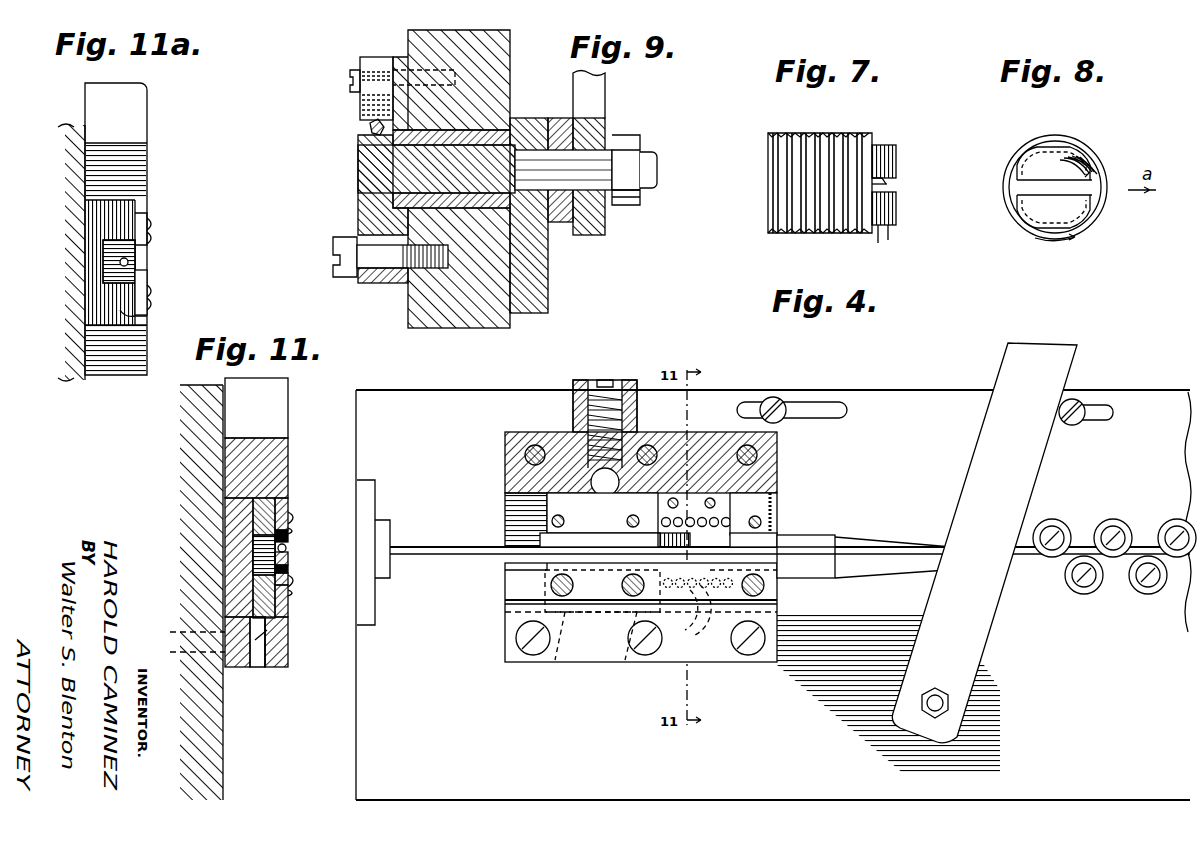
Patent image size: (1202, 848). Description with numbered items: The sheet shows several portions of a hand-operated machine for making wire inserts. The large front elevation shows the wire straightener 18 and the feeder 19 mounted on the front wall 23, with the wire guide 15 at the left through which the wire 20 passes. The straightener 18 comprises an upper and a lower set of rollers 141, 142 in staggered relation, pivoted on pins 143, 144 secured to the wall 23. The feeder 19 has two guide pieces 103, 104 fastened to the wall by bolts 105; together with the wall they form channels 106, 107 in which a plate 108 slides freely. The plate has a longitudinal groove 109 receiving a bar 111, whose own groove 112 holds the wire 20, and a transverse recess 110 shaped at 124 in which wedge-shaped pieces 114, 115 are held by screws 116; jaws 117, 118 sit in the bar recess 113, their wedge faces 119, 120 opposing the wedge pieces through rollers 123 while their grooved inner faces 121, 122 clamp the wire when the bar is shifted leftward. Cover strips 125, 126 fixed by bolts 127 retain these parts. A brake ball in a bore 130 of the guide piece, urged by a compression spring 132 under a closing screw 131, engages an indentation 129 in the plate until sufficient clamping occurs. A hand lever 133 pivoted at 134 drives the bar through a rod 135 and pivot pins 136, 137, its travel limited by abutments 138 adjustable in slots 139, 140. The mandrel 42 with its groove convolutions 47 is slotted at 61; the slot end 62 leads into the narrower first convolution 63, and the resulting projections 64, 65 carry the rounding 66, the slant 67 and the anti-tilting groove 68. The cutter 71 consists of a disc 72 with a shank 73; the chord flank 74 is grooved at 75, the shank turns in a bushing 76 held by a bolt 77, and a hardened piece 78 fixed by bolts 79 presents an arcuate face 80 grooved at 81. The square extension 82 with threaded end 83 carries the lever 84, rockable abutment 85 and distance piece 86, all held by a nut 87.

In FIG. 4, the wire guide 15 is at (381, 501).
In FIG. 4, the wire straightener 18 is at (1131, 505).
In FIG. 11A, the feeder 19 is at (151, 181).
In FIG. 4, the feeder 19 is at (487, 616).
In FIG. 11A, the wire 20 is at (140, 258).
In FIG. 11, the wire 20 is at (286, 545).
In FIG. 4, the wire 20 is at (433, 551).
In FIG. 11A, the front wall 23 is at (70, 333).
In FIG. 9, the front wall 23 is at (420, 303).
In FIG. 11, the front wall 23 is at (176, 415).
In FIG. 4, the front wall 23 is at (888, 693).
In FIG. 7, the mandrel 42 is at (779, 123).
In FIG. 7, the groove convolutions 47 is at (820, 238).
In FIG. 7, the slot 61 is at (895, 178).
In FIG. 8, the slot 61 is at (1030, 178).
In FIG. 8, the end of slot 62 is at (1098, 208).
In FIG. 7, the first convolution 63 is at (891, 240).
In FIG. 8, the first convolution 63 is at (1087, 230).
In FIG. 7, the projection 64 is at (897, 210).
In FIG. 8, the projection 64 is at (1045, 207).
In FIG. 7, the projection 65 is at (880, 162).
In FIG. 8, the projection 65 is at (1075, 158).
In FIG. 8, the rounding 66 is at (1092, 222).
In FIG. 8, the slanted portion 67 is at (1087, 172).
In FIG. 7, the groove 68 is at (888, 178).
In FIG. 8, the groove 68 is at (1030, 158).
In FIG. 9, the cutter 71 is at (346, 183).
In FIG. 9, the disc 72 is at (360, 211).
In FIG. 9, the shank 73 is at (468, 135).
In FIG. 9, the flank 74 is at (375, 140).
In FIG. 9, the groove 75 is at (380, 135).
In FIG. 9, the bushing 76 is at (380, 284).
In FIG. 9, the bolt 77 is at (340, 278).
In FIG. 9, the hardened piece 78 is at (371, 67).
In FIG. 9, the bolts 79 is at (336, 69).
In FIG. 9, the arcuate face 80 is at (360, 111).
In FIG. 9, the groove 81 is at (368, 126).
In FIG. 9, the square extension 82 is at (560, 192).
In FIG. 9, the threaded end 83 is at (657, 168).
In FIG. 9, the lever 84 is at (538, 274).
In FIG. 9, the rockable abutment 85 is at (605, 92).
In FIG. 9, the distance piece 86 is at (560, 118).
In FIG. 9, the nut 87 is at (632, 199).
In FIG. 11, the guide piece 103 is at (288, 488).
In FIG. 11, the guide piece 104 is at (262, 667).
In FIG. 4, the guide piece 104 is at (620, 662).
In FIG. 11, the bolts 105 is at (288, 650).
In FIG. 4, the bolts 105 is at (506, 454).
In FIG. 11, the channel 106 is at (253, 508).
In FIG. 11, the channel 107 is at (238, 667).
In FIG. 11A, the plate 108 is at (148, 321).
In FIG. 11, the plate 108 is at (267, 584).
In FIG. 4, the plate 108 is at (770, 522).
In FIG. 11, the longitudinal groove 109 is at (258, 545).
In FIG. 4, the longitudinal groove 109 is at (505, 530).
In FIG. 11, the transverse recess 110 is at (275, 520).
In FIG. 4, the transverse recess 110 is at (755, 515).
In FIG. 11A, the bar 111 is at (140, 278).
In FIG. 4, the bar 111 is at (780, 540).
In FIG. 11A, the longitudinal groove 112 is at (140, 246).
In FIG. 4, the longitudinal groove 112 is at (790, 580).
In FIG. 4, the transverse recess 113 is at (755, 540).
In FIG. 4, the wedge-shaped piece 114 is at (690, 500).
In FIG. 4, the wedge-shaped piece 115 is at (684, 653).
In FIG. 11, the screws 116 is at (255, 515).
In FIG. 4, the screws 116 is at (710, 512).
In FIG. 4, the jaw 117 is at (655, 540).
In FIG. 4, the jaw 118 is at (602, 619).
In FIG. 4, the wedge face 119 is at (692, 536).
In FIG. 4, the wedge face 120 is at (689, 614).
In FIG. 11, the inner face 121 is at (262, 560).
In FIG. 11, the inner face 122 is at (289, 556).
In FIG. 11, the rollers 123 is at (289, 570).
In FIG. 4, the rollers 123 is at (697, 543).
In FIG. 4, the recess shaping 124 is at (653, 503).
In FIG. 11, the cover strip 125 is at (290, 515).
In FIG. 11A, the cover strip 126 is at (140, 220).
In FIG. 11, the cover strip 126 is at (289, 605).
In FIG. 4, the cover strip 126 is at (505, 581).
In FIG. 11, the bolts 127 is at (291, 585).
In FIG. 4, the bolts 127 is at (573, 586).
In FIG. 4, the indentation 129 is at (602, 513).
In FIG. 4, the bore 130 is at (585, 417).
In FIG. 11, the screw head 131 is at (288, 400).
In FIG. 4, the screw head 131 is at (575, 396).
In FIG. 4, the compression spring 132 is at (576, 440).
In FIG. 4, the hand lever 133 is at (975, 640).
In FIG. 4, the pivot 134 is at (955, 703).
In FIG. 4, the rod 135 is at (872, 572).
In FIG. 4, the pivot pin 136 is at (985, 578).
In FIG. 4, the pivot pin 137 is at (845, 540).
In FIG. 4, the abutments 138 is at (773, 401).
In FIG. 4, the slot 139 is at (1110, 408).
In FIG. 4, the slot 140 is at (735, 406).
In FIG. 4, the upper rollers 141 is at (1062, 533).
In FIG. 4, the lower rollers 142 is at (1140, 590).
In FIG. 4, the pins 143 is at (1128, 535).
In FIG. 4, the pins 144 is at (1155, 590).